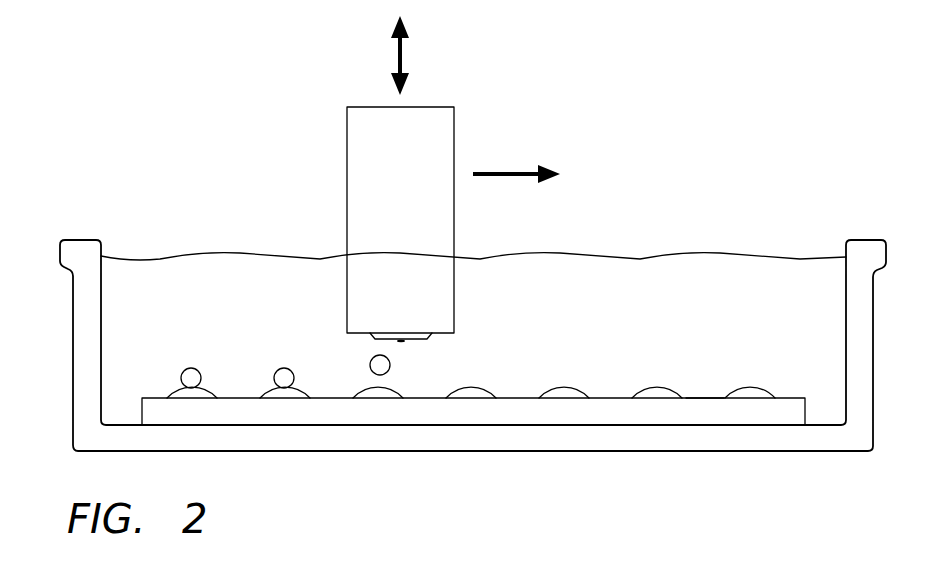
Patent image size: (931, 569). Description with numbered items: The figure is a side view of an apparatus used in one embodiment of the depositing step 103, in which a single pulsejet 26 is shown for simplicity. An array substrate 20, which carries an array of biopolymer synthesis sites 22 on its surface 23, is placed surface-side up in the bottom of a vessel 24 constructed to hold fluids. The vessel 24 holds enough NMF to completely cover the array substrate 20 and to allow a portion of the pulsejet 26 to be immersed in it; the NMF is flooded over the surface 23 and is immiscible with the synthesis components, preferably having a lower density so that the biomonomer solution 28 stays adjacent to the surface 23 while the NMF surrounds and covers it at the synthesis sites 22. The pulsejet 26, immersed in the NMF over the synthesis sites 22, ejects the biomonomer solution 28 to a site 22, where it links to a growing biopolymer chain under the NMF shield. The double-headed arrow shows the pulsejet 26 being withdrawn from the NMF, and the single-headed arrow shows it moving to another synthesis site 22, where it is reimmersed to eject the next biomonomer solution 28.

The depositing step 103 is at (212, 100).
The array substrate 20 is at (527, 410).
The biopolymer synthesis sites 22 is at (566, 391).
The surface 23 is at (710, 398).
The vessel 24 is at (101, 333).
The pulsejet 26 is at (362, 173).
The biomonomer solution 28 is at (390, 362).
The element NMF is at (645, 287).